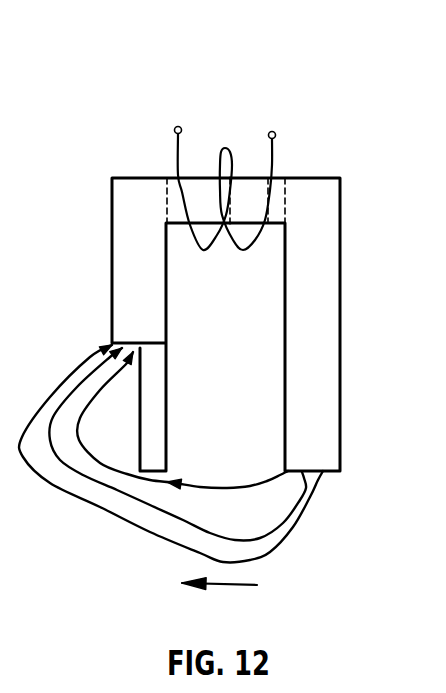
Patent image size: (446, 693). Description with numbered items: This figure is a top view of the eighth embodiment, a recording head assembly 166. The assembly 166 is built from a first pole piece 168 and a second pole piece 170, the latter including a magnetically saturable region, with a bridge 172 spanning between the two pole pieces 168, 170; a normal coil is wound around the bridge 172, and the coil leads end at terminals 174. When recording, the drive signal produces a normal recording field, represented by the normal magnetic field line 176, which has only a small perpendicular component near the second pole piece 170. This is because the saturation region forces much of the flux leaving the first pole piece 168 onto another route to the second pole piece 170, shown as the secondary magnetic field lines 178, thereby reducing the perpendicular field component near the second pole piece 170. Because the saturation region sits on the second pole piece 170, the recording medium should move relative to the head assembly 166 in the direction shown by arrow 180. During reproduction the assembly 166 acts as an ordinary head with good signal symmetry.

The recording head assembly 166 is at (292, 98).
The first pole piece 168 is at (340, 325).
The second pole piece 170 is at (112, 273).
The bridge 172 is at (203, 250).
The coil terminals 174 is at (275, 152).
The normal magnetic field line 176 is at (223, 488).
The secondary magnetic field lines 178 is at (130, 477).
The arrow 180 is at (230, 585).